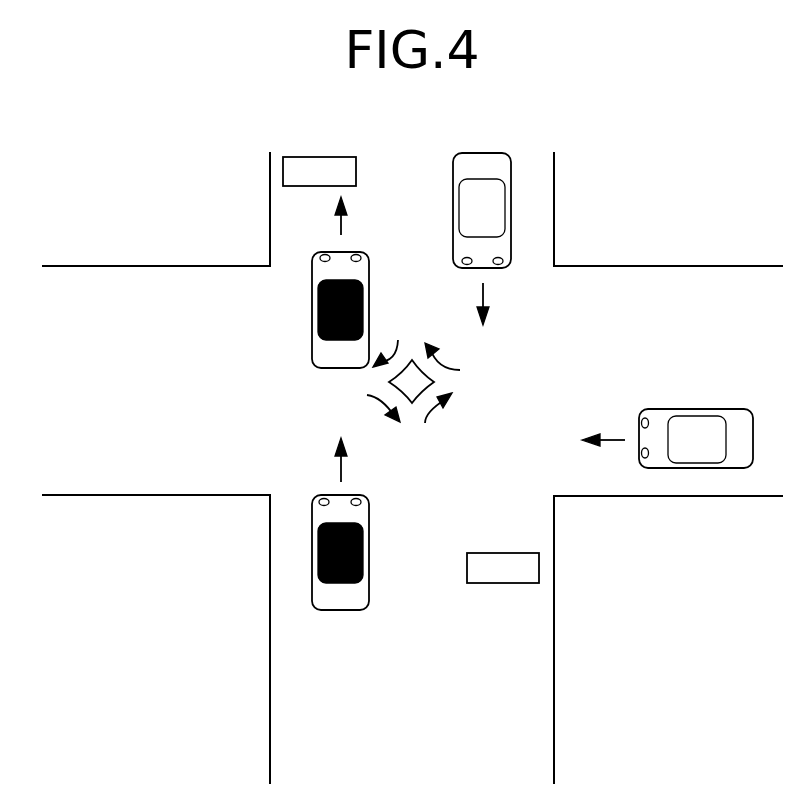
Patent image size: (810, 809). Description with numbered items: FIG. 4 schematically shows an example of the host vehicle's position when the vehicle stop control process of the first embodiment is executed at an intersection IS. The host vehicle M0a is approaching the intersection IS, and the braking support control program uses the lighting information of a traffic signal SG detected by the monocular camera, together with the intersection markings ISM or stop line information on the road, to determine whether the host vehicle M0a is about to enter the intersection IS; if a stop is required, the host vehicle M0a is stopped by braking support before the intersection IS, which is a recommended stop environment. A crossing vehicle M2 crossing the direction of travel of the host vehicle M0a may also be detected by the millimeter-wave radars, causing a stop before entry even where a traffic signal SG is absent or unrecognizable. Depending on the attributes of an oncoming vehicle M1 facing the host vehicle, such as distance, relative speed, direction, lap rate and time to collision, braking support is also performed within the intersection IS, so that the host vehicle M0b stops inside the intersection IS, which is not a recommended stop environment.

The intersection IS is at (494, 439).
The traffic signal SG is at (411, 370).
The host vehicle M0a is at (360, 605).
The host vehicle M0b is at (322, 362).
The oncoming vehicle M1 is at (482, 159).
The crossing vehicle M2 is at (730, 417).
The intersection markings ISM is at (434, 382).